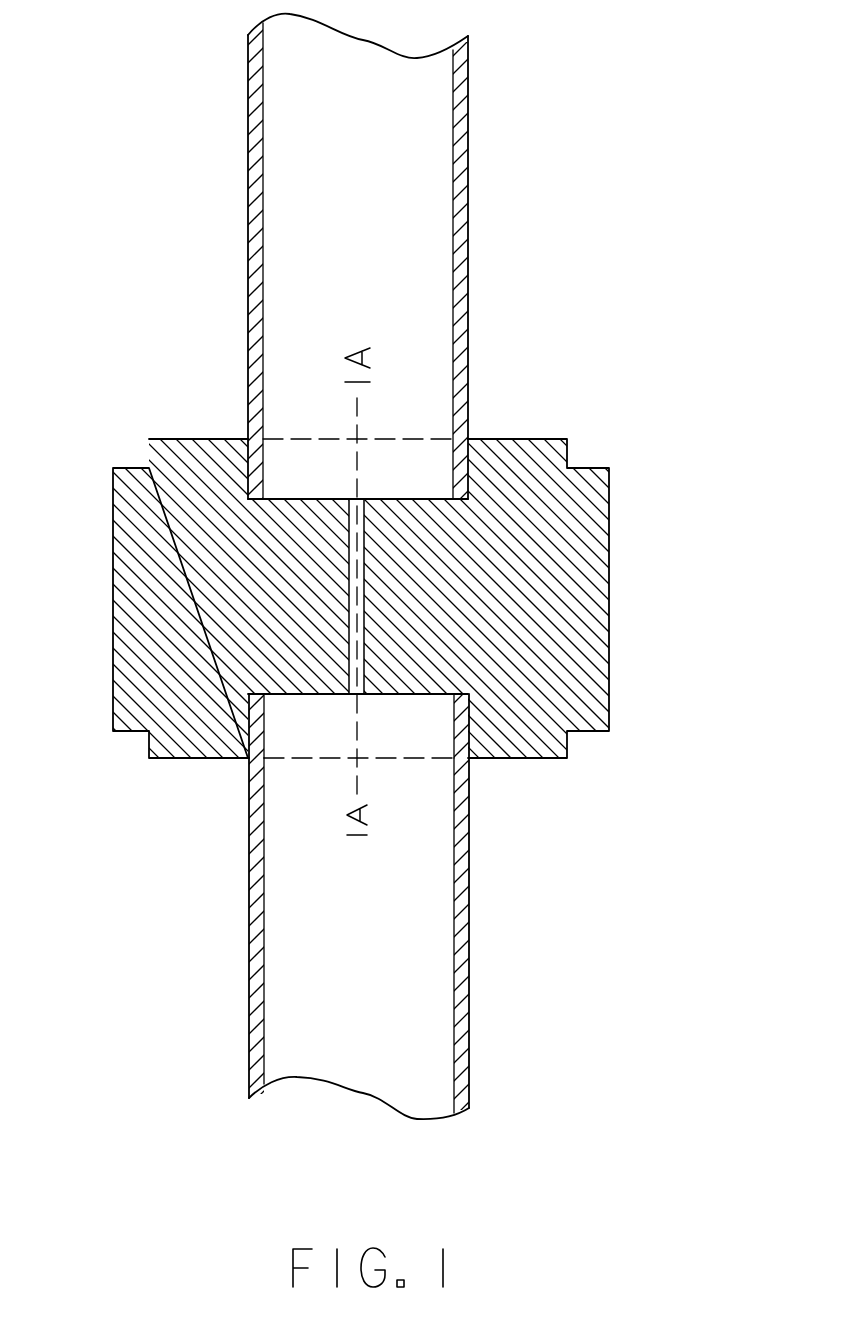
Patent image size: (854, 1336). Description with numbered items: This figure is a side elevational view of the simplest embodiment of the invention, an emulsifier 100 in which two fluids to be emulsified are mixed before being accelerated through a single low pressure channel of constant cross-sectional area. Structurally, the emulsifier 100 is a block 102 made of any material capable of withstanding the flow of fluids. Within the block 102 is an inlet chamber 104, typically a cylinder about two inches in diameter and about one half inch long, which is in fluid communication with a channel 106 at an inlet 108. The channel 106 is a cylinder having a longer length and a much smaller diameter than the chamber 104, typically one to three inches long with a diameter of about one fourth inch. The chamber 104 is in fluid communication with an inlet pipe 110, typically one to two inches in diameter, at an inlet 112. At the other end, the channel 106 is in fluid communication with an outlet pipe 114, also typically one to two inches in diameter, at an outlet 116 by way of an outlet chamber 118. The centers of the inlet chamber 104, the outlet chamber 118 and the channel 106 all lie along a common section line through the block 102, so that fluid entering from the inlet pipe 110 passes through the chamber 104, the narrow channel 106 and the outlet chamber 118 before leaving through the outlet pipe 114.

The emulsifier 100 is at (382, 620).
The block 102 is at (178, 485).
The inlet chamber 104 is at (308, 733).
The channel 106 is at (248, 438).
The inlet 108 is at (367, 697).
The inlet pipe 110 is at (350, 912).
The inlet 112 is at (682, 963).
The outlet pipe 114 is at (352, 244).
The outlet 116 is at (355, 438).
The outlet chamber 118 is at (398, 480).